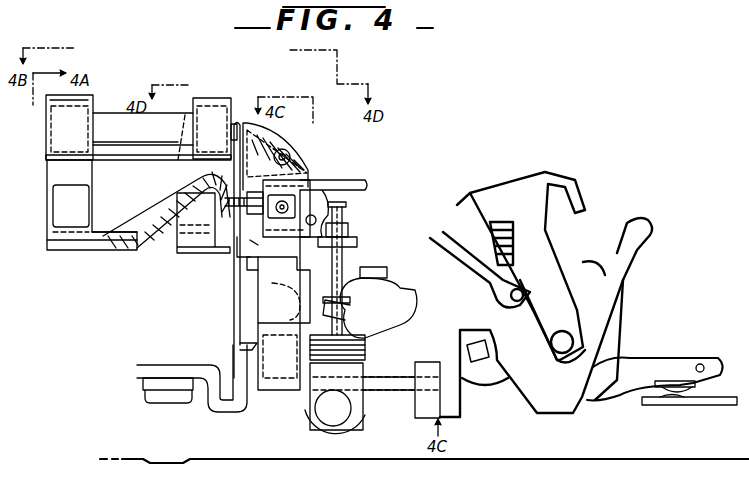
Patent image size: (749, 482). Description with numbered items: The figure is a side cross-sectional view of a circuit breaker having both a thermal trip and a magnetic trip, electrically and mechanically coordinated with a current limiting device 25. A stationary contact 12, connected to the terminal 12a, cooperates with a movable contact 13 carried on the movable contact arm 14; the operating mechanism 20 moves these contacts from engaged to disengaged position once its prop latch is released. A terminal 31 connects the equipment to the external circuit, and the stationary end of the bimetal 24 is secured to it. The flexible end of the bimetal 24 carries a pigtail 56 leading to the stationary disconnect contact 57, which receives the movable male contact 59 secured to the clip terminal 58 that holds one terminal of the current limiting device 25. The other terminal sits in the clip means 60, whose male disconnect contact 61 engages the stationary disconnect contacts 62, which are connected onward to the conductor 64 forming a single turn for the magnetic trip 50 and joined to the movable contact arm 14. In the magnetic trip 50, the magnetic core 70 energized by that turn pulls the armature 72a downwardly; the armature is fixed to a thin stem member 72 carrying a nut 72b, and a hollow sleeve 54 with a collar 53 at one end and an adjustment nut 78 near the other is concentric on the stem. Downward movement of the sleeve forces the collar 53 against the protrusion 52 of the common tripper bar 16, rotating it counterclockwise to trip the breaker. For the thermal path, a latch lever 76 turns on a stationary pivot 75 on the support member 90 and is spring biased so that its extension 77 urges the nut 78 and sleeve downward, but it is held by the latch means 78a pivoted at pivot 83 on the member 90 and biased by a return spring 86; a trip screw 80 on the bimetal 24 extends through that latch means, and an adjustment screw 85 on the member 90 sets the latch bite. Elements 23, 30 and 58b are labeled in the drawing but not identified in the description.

The stationary contact 12 is at (673, 401).
The terminal 12a is at (715, 406).
The movable contact 13 is at (697, 384).
The movable contact arm 14 is at (677, 362).
The common tripper bar 16 is at (405, 297).
The operating mechanism 20 is at (607, 197).
The terminal 23 is at (5, 161).
The bimetal 24 is at (233, 330).
The current limiting device 25 is at (138, 166).
The tab 30 is at (237, 133).
The terminal 31 is at (172, 404).
The magnetic trip 50 is at (303, 356).
The protrusion 52 is at (345, 313).
The collar 53 is at (333, 298).
The hollow sleeve 54 is at (310, 262).
The pigtail 56 is at (152, 251).
The stationary disconnect contact 57 is at (75, 213).
The clip terminal 58 is at (80, 110).
The pole piece body 58b is at (68, 205).
The movable male contact 59 is at (87, 173).
The clip means 60 is at (213, 102).
The male disconnect contact 61 is at (179, 168).
The stationary disconnect contacts 62 is at (205, 228).
The conductor 64 is at (277, 388).
The magnetic core 70 is at (363, 370).
The thin stem member 72 is at (346, 204).
The armature 72a is at (368, 343).
The nut 72b is at (347, 196).
The stationary pivot 75 is at (330, 204).
The latch lever 76 is at (240, 250).
The extension 77 is at (350, 220).
The adjustment nut 78 is at (358, 235).
The latch means 78a is at (244, 165).
The trip screw 80 is at (213, 217).
The pivot 83 is at (300, 151).
The adjustment screw 85 is at (236, 246).
The return spring 86 is at (276, 139).
The support member 90 is at (297, 281).